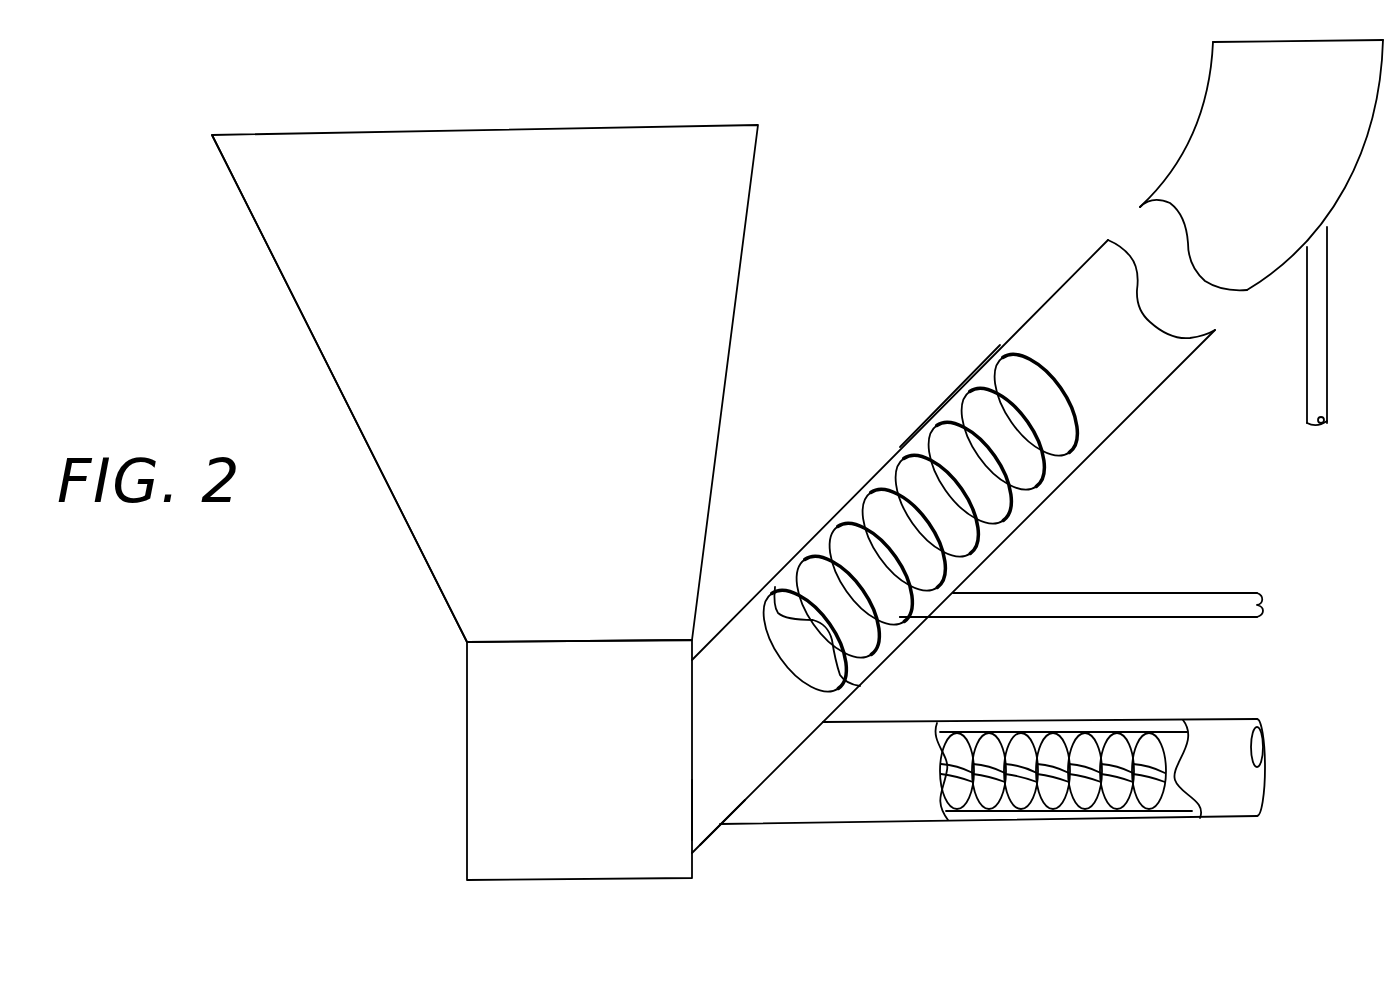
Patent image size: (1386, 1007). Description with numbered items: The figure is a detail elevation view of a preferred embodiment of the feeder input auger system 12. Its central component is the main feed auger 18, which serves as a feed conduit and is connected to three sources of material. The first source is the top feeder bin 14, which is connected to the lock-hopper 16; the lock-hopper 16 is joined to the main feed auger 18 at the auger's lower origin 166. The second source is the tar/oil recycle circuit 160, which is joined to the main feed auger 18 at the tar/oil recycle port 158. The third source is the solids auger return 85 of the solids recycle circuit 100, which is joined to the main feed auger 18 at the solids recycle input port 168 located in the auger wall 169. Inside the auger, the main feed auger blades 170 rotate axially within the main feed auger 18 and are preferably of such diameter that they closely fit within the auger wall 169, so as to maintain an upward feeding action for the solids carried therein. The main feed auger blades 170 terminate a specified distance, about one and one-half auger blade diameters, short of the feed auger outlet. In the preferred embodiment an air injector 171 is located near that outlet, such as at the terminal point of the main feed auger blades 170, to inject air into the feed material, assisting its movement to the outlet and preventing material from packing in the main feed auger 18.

The input auger system 12 is at (397, 526).
The top feeder bin 14 is at (527, 356).
The lock-hopper 16 is at (584, 752).
The main feed auger 18 is at (897, 450).
The solids auger return 85 is at (883, 800).
The solids recycle circuit 100 is at (1197, 718).
The tar/oil recycle port 158 is at (927, 622).
The tar/oil recycle circuit 160 is at (1166, 590).
The lower origin 166 is at (692, 812).
The solids recycle input port 168 is at (723, 825).
The auger wall 169 is at (960, 390).
The main feed auger blades 170 is at (867, 527).
The air injector 171 is at (1313, 384).